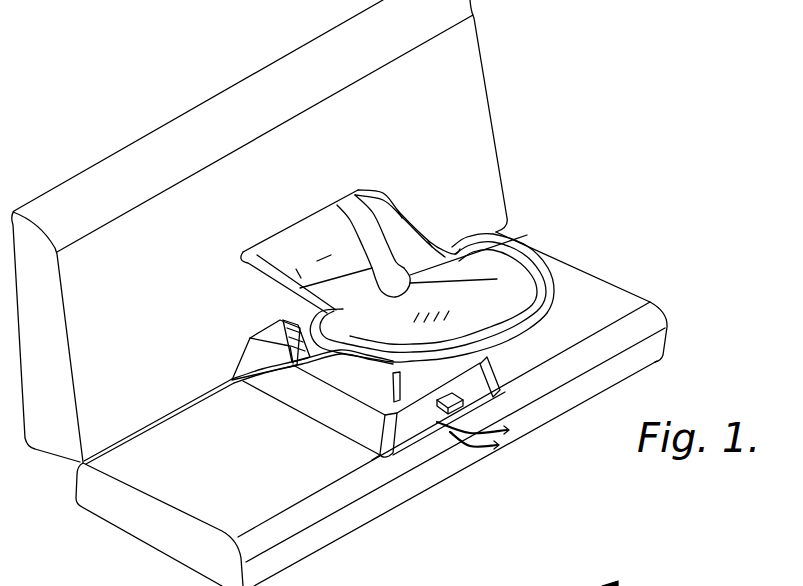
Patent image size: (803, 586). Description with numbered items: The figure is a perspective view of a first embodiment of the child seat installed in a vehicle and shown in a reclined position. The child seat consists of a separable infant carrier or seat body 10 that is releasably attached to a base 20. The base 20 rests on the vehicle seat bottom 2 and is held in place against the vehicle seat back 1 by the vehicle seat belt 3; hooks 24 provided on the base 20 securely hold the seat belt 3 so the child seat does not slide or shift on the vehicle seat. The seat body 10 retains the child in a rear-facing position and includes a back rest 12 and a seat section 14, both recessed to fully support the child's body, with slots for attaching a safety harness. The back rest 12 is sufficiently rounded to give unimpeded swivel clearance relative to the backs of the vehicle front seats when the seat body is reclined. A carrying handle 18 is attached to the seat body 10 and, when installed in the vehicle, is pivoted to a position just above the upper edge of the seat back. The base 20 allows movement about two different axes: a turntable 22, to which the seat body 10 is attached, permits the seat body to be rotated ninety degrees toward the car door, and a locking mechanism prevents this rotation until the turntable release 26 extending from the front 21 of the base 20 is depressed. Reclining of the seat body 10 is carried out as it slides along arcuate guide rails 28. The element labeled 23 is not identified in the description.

The vehicle seat back 1 is at (470, 124).
The vehicle seat bottom 2 is at (594, 288).
The vehicle seat belt 3 is at (256, 379).
The seat body 10 is at (381, 184).
The back rest 12 is at (490, 304).
The seat section 14 is at (317, 235).
The carrying handle 18 is at (510, 240).
The base 20 is at (310, 398).
The front 21 is at (483, 382).
The turntable 22 is at (430, 380).
The belt clamp 23 is at (250, 347).
The hooks 24 is at (283, 335).
The turntable release 26 is at (492, 395).
The arcuate guide rails 28 is at (405, 395).